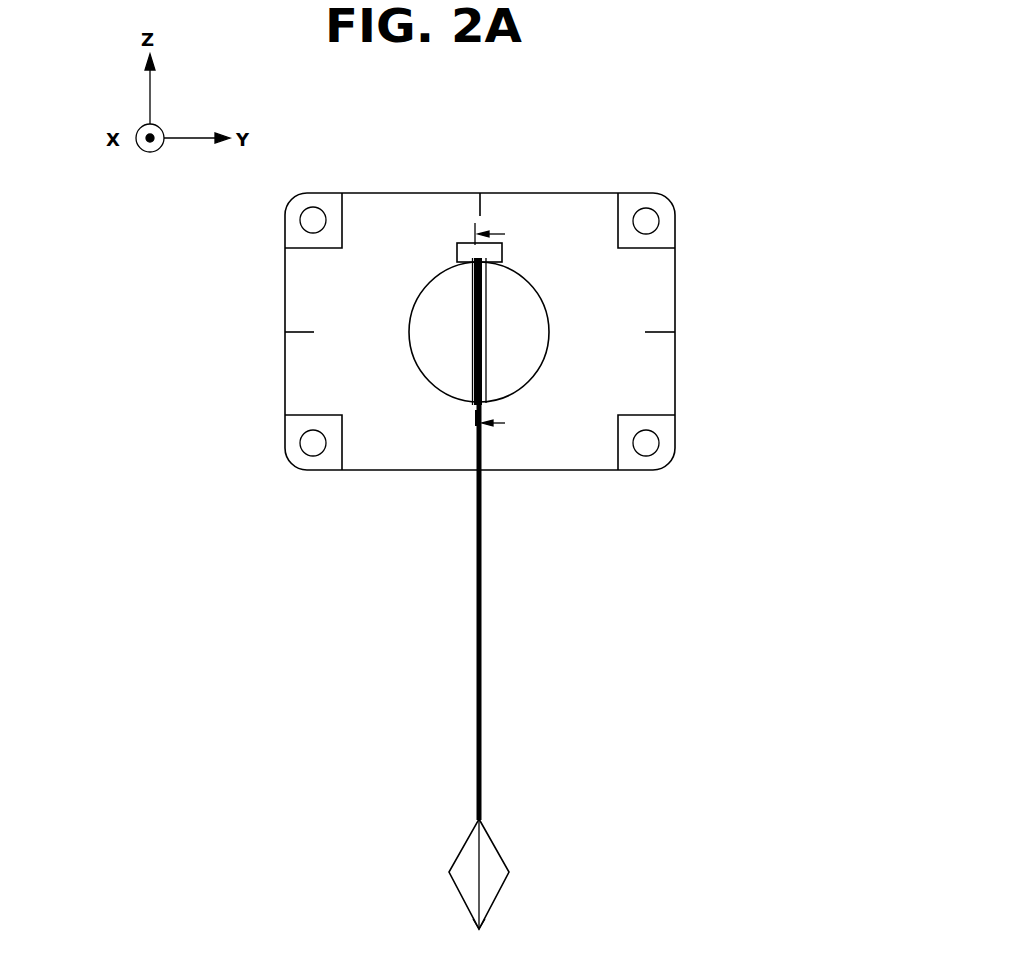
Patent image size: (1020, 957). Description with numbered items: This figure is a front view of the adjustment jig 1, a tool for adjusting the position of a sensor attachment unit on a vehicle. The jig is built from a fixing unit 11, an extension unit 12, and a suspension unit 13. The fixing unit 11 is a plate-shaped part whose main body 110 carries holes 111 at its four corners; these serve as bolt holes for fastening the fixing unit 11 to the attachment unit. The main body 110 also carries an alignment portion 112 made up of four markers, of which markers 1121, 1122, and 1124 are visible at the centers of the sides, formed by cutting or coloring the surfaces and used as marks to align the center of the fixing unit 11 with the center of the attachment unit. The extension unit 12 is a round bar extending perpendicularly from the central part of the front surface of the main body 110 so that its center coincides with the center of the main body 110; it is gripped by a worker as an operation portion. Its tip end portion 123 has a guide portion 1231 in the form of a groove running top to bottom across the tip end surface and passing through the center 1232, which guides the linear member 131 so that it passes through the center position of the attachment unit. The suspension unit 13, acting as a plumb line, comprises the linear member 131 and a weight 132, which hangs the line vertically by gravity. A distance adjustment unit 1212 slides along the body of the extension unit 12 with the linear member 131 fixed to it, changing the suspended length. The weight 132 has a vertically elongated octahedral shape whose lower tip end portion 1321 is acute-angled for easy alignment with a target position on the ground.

The adjustment jig 1 is at (605, 124).
The fixing unit 11 is at (416, 149).
The main body 110 is at (372, 192).
The holes 111 is at (313, 206).
The alignment portion 112 is at (746, 330).
The marker 1121 is at (488, 198).
The marker 1122 is at (662, 331).
The marker 1124 is at (291, 330).
The extension unit 12 is at (388, 357).
The distance adjustment unit 1212 is at (460, 243).
The tip end portion 123 is at (424, 295).
The guide portion 1231 is at (474, 372).
The center 1232 is at (478, 333).
The suspension unit 13 is at (527, 625).
The linear member 131 is at (485, 718).
The weight 132 is at (518, 881).
The tip end portion 1321 is at (481, 929).